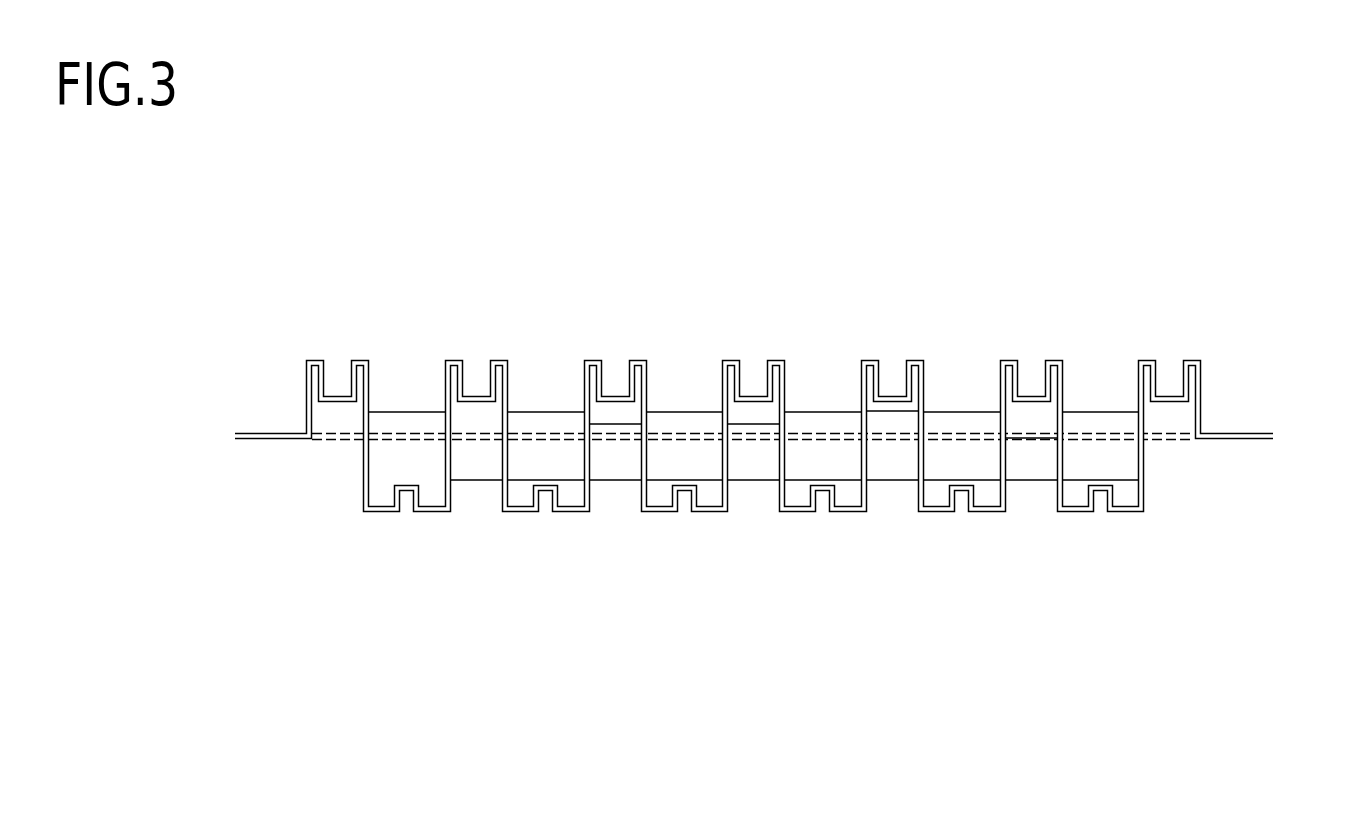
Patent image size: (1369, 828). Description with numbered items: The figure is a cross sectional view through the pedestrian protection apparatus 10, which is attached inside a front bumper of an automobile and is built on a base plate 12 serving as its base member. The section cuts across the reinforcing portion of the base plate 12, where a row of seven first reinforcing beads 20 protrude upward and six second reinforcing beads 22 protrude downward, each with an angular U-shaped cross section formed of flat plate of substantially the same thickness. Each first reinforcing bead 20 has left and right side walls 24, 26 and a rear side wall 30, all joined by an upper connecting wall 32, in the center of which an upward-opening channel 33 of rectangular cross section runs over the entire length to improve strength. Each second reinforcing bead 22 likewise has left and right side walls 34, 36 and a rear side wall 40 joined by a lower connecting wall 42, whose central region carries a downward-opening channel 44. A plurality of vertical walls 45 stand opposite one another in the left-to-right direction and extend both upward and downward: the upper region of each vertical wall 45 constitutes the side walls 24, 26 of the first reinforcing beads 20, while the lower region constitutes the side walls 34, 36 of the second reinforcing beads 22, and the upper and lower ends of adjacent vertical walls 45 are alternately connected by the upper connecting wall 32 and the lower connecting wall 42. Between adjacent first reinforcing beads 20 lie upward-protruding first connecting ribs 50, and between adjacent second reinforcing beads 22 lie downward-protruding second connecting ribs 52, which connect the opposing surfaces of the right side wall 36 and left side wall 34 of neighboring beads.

The pedestrian protection apparatus 10 is at (1258, 460).
The base plate 12 is at (255, 445).
The first reinforcing beads 20 is at (315, 353).
The second reinforcing beads 22 is at (392, 522).
The left side wall 24 is at (307, 392).
The right side wall 26 is at (368, 382).
The rear side wall 30 is at (337, 420).
The upper connecting wall 32 is at (358, 362).
The channel 33 is at (330, 390).
The left side wall 34 is at (363, 495).
The right side wall 36 is at (448, 493).
The rear side wall 40 is at (432, 497).
The lower connecting wall 42 is at (383, 512).
The channel 44 is at (402, 500).
The vertical walls 45 is at (440, 444).
The first connecting ribs 50 is at (541, 452).
The second connecting ribs 52 is at (473, 458).